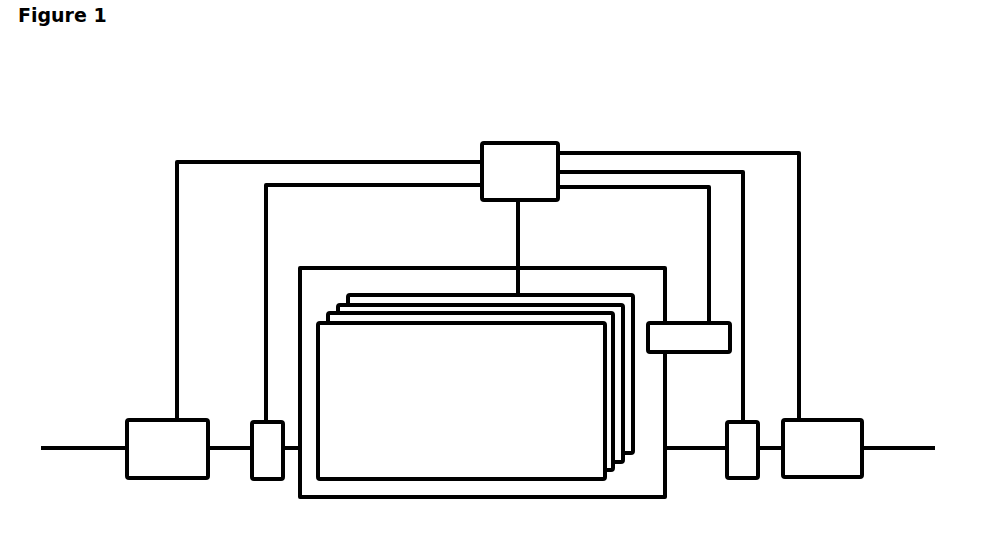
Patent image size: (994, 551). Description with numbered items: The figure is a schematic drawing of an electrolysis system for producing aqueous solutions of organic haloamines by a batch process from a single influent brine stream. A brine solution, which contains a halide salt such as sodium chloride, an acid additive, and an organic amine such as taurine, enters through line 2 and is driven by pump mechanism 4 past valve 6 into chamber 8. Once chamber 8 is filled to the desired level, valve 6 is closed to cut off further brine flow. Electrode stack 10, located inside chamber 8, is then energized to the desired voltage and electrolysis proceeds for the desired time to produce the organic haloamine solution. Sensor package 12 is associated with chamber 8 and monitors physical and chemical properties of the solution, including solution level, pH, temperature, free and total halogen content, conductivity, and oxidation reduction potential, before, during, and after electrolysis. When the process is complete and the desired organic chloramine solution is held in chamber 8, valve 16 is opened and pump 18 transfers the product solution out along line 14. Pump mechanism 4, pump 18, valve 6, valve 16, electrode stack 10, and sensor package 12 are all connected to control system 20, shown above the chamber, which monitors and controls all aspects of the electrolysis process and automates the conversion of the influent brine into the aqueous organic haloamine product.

The line 2 is at (100, 441).
The pump mechanism 4 is at (157, 434).
The valve 6 is at (266, 437).
The chamber 8 is at (358, 267).
The electrode stack 10 is at (438, 363).
The sensor package 12 is at (688, 330).
The line 14 is at (684, 455).
The valve 16 is at (742, 465).
The pump 18 is at (829, 434).
The control system 20 is at (527, 155).